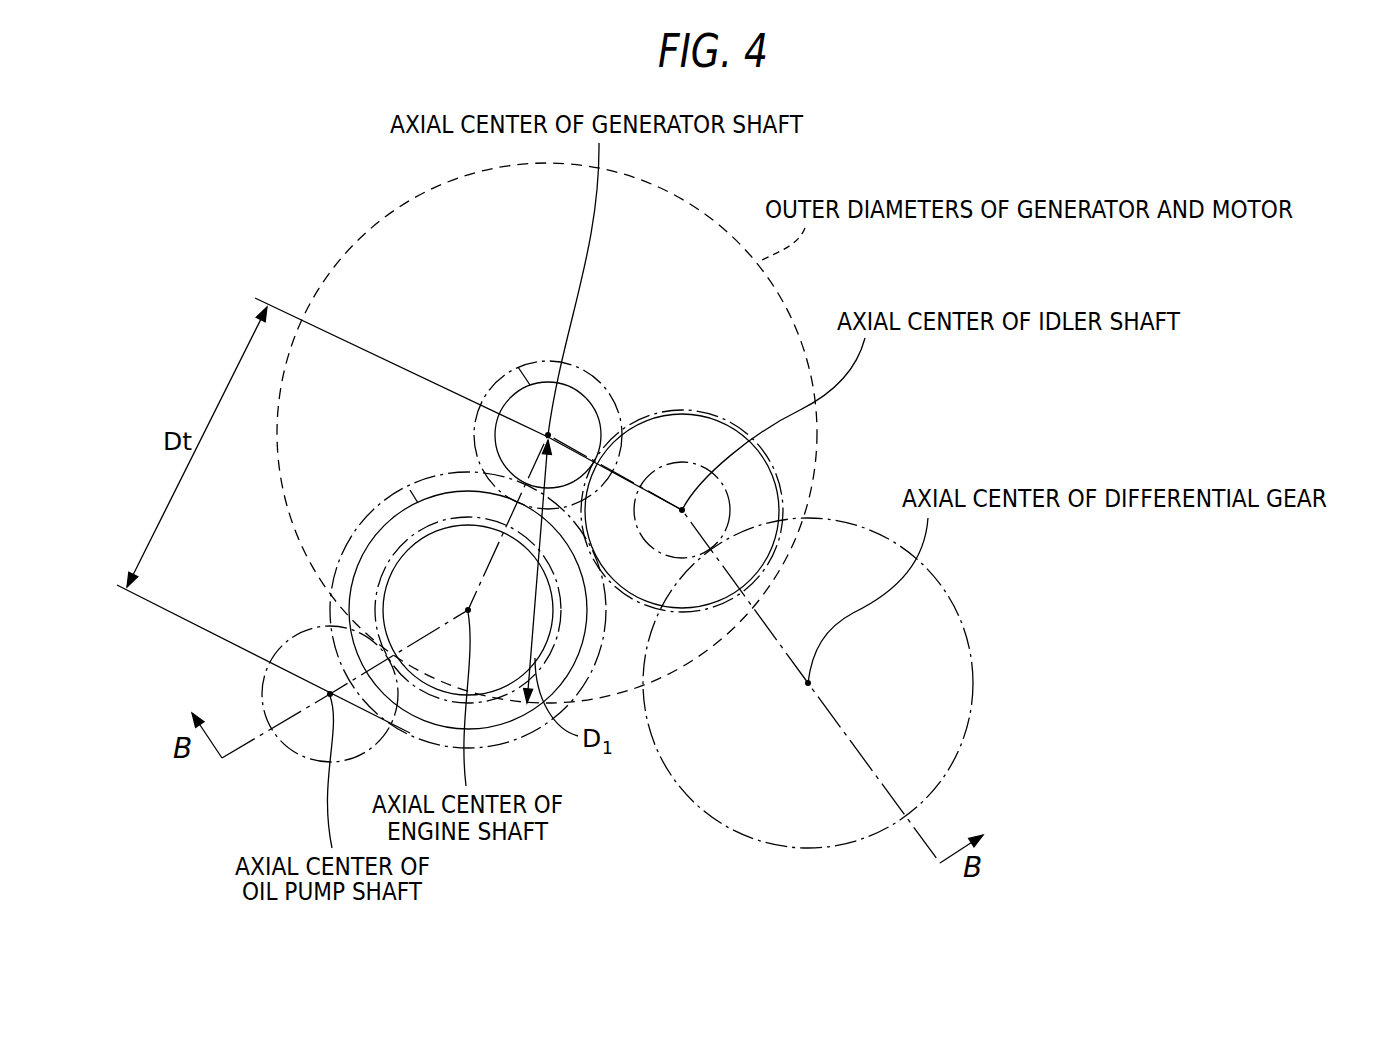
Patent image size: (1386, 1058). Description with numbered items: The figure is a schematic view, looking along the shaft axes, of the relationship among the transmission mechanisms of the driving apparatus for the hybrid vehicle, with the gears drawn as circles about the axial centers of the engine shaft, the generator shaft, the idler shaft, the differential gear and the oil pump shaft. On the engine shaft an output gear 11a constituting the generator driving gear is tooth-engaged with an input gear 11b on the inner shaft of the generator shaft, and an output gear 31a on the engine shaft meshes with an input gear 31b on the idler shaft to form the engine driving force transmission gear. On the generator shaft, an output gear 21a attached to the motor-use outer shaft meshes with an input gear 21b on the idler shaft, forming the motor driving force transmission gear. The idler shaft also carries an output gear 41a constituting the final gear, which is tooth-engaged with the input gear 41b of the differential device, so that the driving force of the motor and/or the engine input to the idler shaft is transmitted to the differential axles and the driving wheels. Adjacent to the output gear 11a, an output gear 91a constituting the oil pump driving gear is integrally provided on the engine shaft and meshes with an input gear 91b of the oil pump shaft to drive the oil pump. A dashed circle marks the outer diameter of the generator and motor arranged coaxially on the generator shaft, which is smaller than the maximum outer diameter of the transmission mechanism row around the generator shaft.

The output gear 21a is at (518, 368).
The input gear 11b is at (590, 371).
The input gear 21b is at (688, 410).
The input gear 31b is at (722, 416).
The output gear 41a is at (722, 484).
The output gear 31a is at (363, 512).
The output gear 11a is at (410, 491).
The output gear 91a is at (467, 518).
The input gear 41b is at (958, 613).
The input gear 91b is at (259, 688).